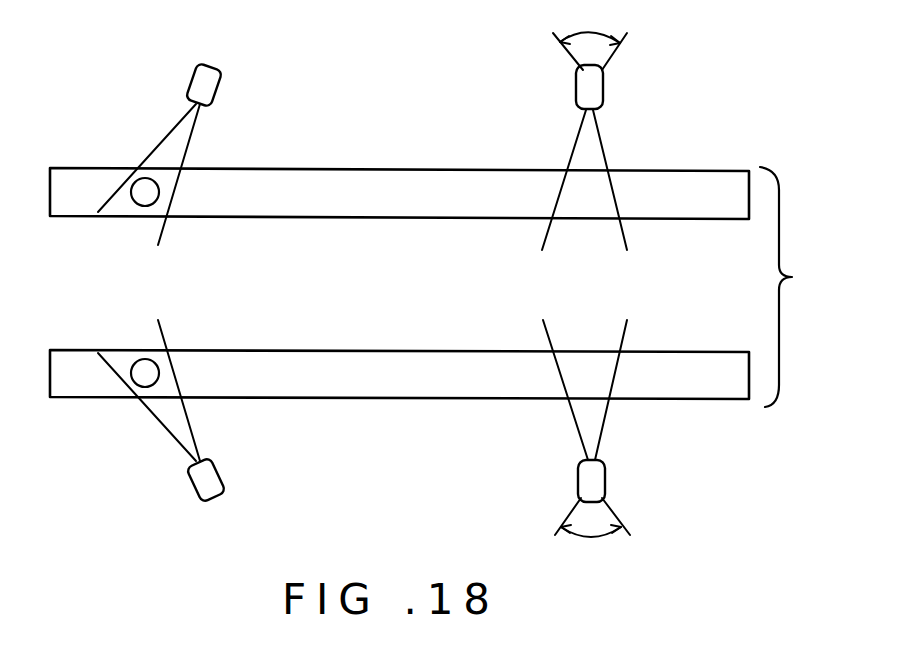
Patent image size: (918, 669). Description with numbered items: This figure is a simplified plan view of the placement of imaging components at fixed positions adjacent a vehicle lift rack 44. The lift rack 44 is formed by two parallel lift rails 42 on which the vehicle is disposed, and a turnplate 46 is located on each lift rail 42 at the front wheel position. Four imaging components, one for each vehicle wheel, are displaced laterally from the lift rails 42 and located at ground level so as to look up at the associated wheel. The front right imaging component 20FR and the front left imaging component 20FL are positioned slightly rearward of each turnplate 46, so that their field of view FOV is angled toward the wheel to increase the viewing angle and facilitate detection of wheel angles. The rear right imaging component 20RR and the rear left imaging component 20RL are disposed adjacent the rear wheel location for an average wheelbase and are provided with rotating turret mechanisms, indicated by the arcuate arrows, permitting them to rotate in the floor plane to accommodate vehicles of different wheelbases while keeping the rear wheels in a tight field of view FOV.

The front right imaging component 20FR is at (218, 87).
The front left imaging component 20FL is at (215, 470).
The rear right imaging component 20RR is at (603, 85).
The rear left imaging component 20RL is at (605, 480).
The field of view FOV is at (187, 137).
The lift rail 42 is at (315, 203).
The lift rack 44 is at (793, 287).
The turnplate 46 is at (147, 192).